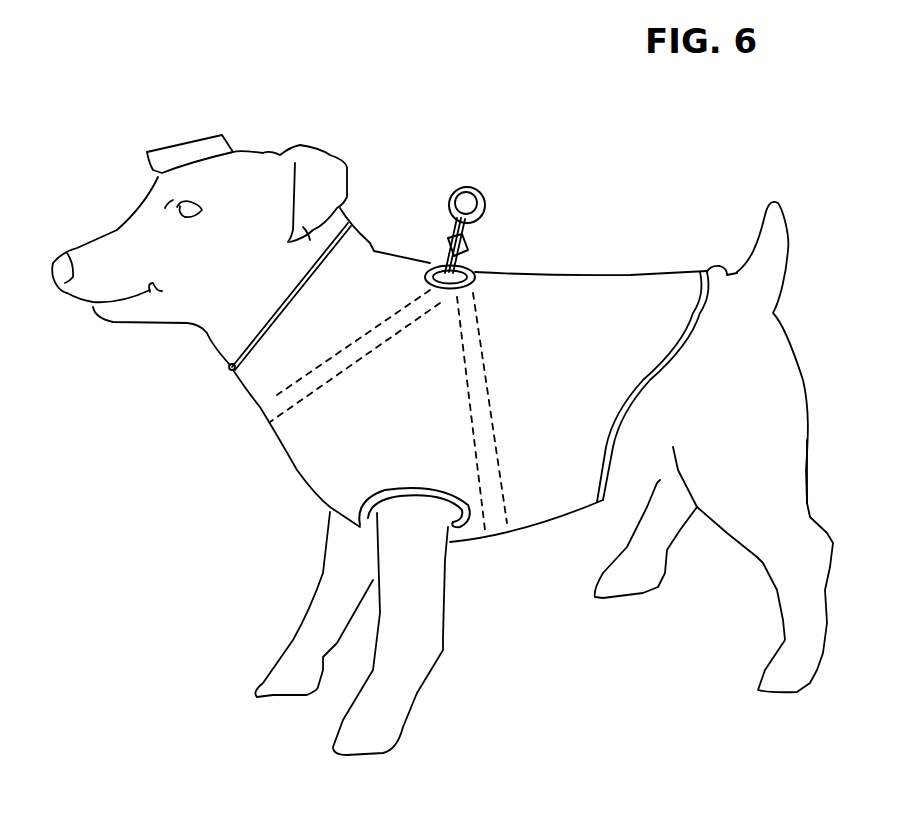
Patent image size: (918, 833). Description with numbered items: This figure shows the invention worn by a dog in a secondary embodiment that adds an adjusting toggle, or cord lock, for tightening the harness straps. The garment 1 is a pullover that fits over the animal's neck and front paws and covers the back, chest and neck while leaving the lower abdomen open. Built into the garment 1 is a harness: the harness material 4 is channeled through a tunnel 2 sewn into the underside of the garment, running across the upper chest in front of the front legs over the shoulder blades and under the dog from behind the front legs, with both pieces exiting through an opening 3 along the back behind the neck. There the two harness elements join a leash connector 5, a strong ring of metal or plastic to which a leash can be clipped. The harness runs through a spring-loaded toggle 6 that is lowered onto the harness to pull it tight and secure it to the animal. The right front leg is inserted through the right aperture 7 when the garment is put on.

The garment 1 is at (592, 284).
The tunnel 2 is at (500, 510).
The opening 3 is at (472, 273).
The harness material 4 is at (470, 227).
The leash connector 5 is at (458, 197).
The toggle 6 is at (452, 240).
The right aperture 7 is at (427, 507).